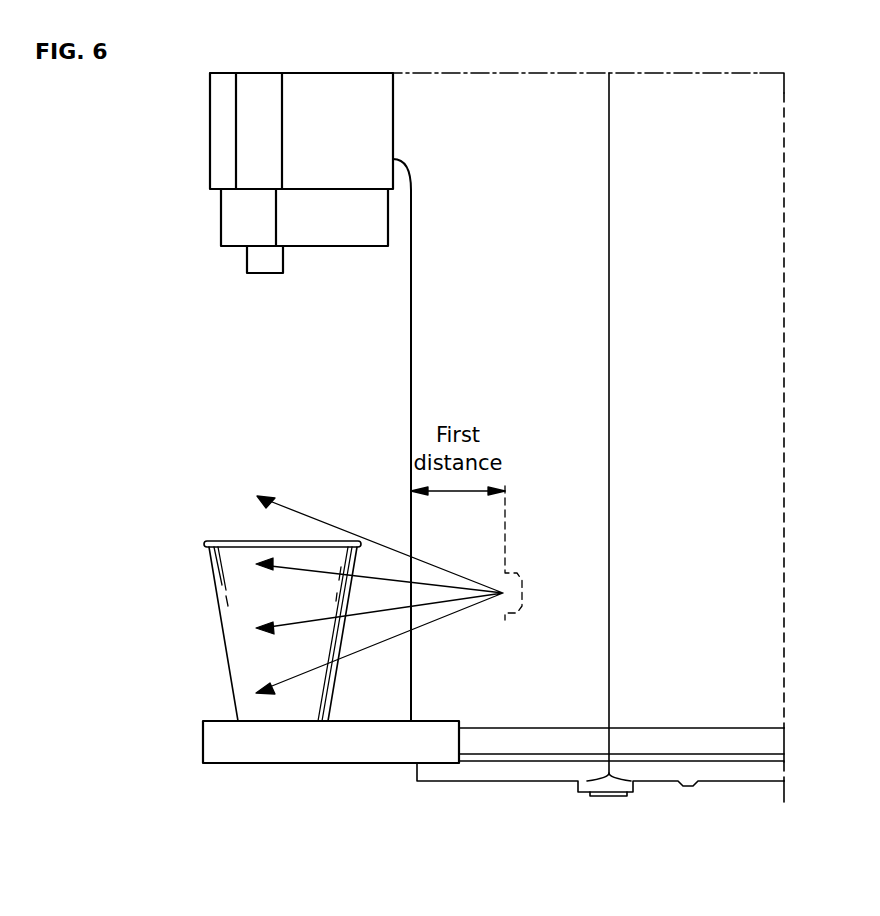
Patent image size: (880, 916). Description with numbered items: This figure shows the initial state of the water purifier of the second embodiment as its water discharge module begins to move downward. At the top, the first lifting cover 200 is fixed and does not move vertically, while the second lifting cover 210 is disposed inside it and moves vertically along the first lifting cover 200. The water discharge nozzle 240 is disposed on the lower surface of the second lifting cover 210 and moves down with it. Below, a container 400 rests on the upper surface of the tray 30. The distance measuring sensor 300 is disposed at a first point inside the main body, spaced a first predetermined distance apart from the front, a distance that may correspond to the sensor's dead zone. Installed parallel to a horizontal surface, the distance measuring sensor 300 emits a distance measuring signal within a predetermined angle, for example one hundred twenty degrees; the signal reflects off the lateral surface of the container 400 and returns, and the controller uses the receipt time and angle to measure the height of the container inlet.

The first lifting cover 200 is at (222, 124).
The second lifting cover 210 is at (231, 217).
The water discharge nozzle 240 is at (258, 260).
The container 400 is at (240, 642).
The tray 30 is at (220, 740).
The distance measuring sensor 300 is at (509, 620).